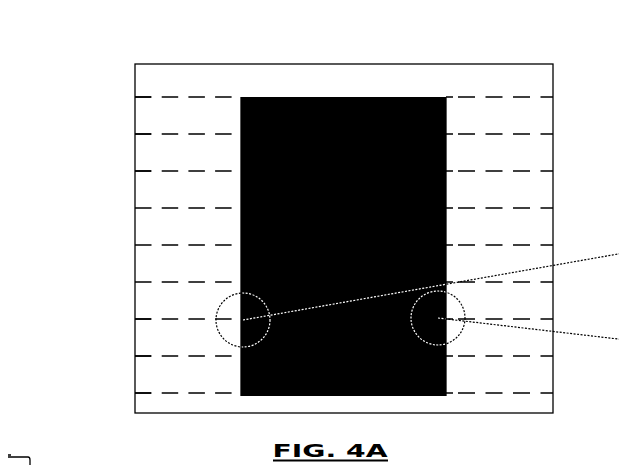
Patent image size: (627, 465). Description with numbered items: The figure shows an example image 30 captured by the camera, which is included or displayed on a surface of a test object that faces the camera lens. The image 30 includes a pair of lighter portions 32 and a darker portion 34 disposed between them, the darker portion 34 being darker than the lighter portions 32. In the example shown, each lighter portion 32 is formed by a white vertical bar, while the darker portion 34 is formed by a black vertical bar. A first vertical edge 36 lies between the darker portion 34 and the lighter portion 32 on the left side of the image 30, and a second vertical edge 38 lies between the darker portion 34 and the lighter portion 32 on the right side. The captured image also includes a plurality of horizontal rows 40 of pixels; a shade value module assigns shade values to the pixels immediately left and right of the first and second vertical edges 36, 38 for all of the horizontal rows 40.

The image 30 is at (113, 62).
The lighter portions 32 is at (145, 262).
The darker portion 34 is at (355, 89).
The first vertical edge 36 is at (233, 104).
The second vertical edge 38 is at (438, 113).
The horizontal rows 40 is at (127, 163).